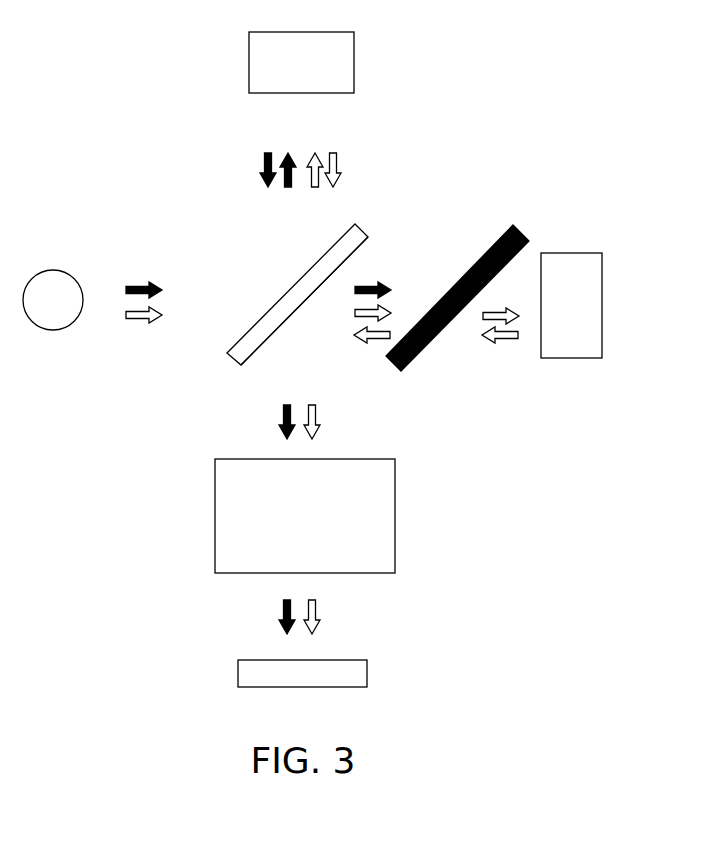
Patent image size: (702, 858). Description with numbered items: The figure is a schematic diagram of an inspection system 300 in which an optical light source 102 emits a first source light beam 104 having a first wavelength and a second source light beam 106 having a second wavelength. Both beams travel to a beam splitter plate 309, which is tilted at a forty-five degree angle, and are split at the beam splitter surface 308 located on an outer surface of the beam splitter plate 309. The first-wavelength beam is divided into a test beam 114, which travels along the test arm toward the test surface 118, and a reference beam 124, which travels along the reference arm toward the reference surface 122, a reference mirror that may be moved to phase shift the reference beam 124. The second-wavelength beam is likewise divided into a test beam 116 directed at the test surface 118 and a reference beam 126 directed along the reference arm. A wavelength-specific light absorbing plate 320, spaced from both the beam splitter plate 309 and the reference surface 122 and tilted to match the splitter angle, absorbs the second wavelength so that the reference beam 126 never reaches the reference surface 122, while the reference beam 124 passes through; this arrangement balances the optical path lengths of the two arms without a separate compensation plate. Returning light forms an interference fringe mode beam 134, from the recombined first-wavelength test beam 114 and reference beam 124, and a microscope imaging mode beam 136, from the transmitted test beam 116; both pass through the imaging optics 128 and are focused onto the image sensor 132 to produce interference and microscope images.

The inspection system 300 is at (112, 108).
The test surface 118 is at (301, 62).
The test beam 116 is at (229, 158).
The test beam 114 is at (369, 158).
The optical light source 102 is at (53, 300).
The source light beam 106 is at (130, 287).
The source light beam 104 is at (129, 318).
The beam splitter plate 309 is at (276, 302).
The beam splitter surface 308 is at (264, 348).
The reference beam 126 is at (364, 285).
The reference beam 124 is at (384, 317).
The wavelength-specific light absorbing plate 320 is at (470, 272).
The reference surface 122 is at (571, 305).
The microscope imaging mode beam 136 is at (282, 421).
The interference fringe mode beam 134 is at (319, 416).
The imaging optics 128 is at (305, 516).
The image sensor 132 is at (302, 673).